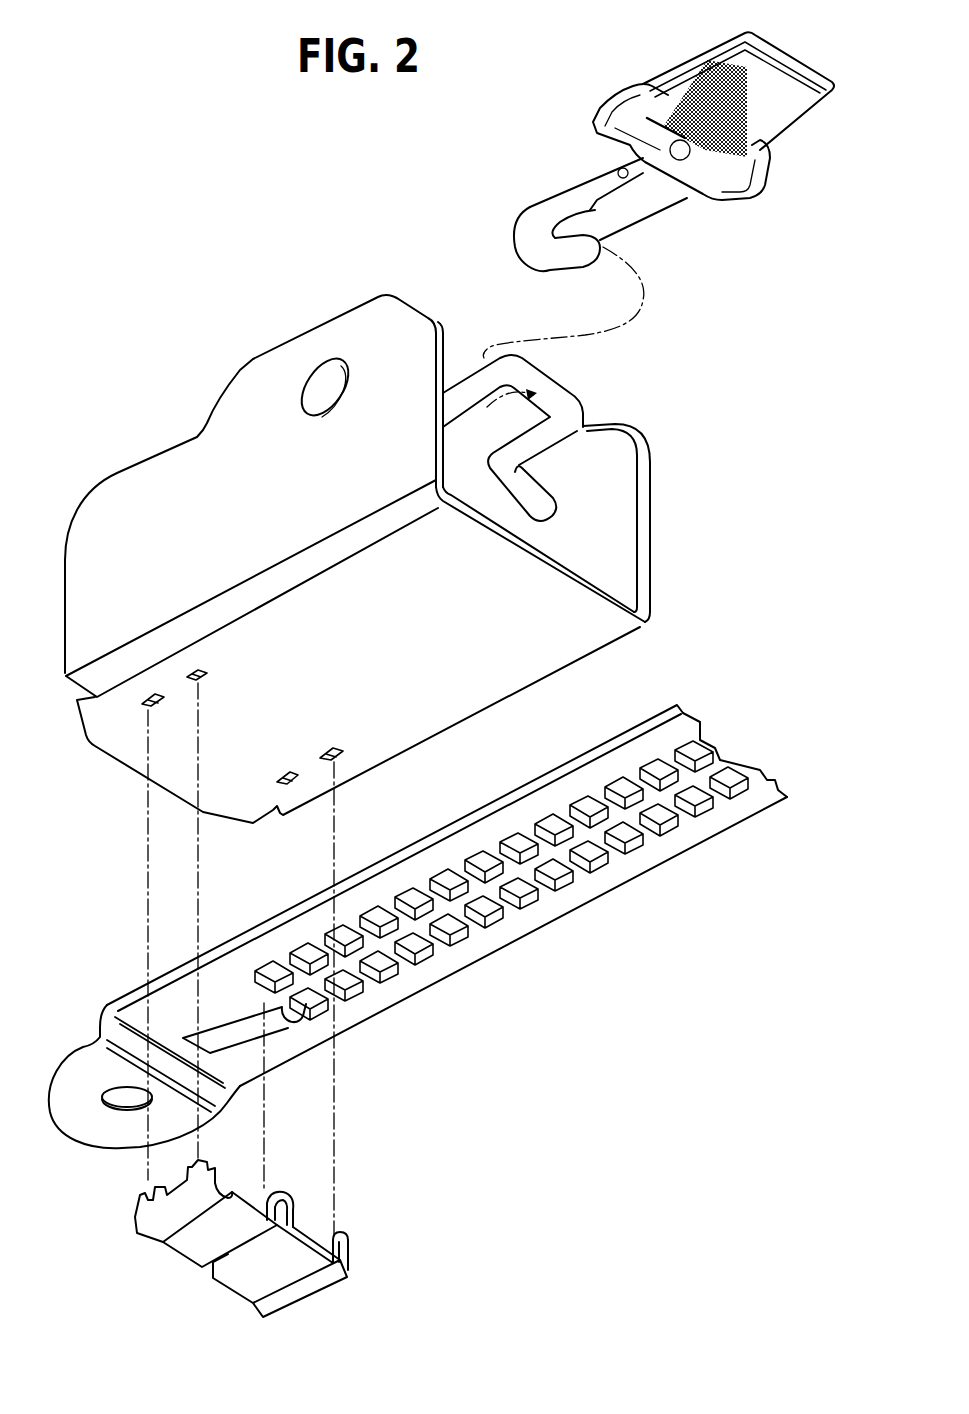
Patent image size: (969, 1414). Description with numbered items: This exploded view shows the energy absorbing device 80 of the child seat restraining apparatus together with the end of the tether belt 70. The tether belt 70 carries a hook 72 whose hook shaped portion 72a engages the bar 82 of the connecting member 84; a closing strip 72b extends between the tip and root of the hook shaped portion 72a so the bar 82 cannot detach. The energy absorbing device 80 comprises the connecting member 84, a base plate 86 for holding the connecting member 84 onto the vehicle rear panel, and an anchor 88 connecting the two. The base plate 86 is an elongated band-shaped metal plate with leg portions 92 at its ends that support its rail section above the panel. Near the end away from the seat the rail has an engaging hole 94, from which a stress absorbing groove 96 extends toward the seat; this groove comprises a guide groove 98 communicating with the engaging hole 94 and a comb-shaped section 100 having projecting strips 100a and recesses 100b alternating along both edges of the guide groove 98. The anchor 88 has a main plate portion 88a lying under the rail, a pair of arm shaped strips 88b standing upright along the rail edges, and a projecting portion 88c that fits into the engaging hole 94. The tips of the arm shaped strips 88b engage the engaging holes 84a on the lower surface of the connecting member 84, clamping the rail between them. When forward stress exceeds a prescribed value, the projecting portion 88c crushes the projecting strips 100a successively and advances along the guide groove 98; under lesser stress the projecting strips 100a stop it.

The tether belt 70 is at (703, 62).
The hook 72 is at (599, 178).
The hook shaped portion 72a is at (525, 218).
The closing strip 72b is at (622, 218).
The energy absorbing device 80 is at (98, 278).
The bar 82 is at (570, 396).
The connecting member 84 is at (359, 765).
The engaging holes 84a is at (330, 748).
The base plate 86 is at (418, 935).
The anchor 88 is at (248, 1255).
The main plate portion 88a is at (243, 1275).
The arm shaped strips 88b is at (350, 1250).
The projecting portion 88c is at (287, 1197).
The leg portions 92 is at (97, 1115).
The engaging hole 94 is at (237, 1015).
The stress absorbing groove 96 is at (786, 775).
The guide groove 98 is at (283, 993).
The comb-shaped section 100 is at (514, 853).
The projecting strips 100a is at (455, 880).
The recesses 100b is at (519, 848).